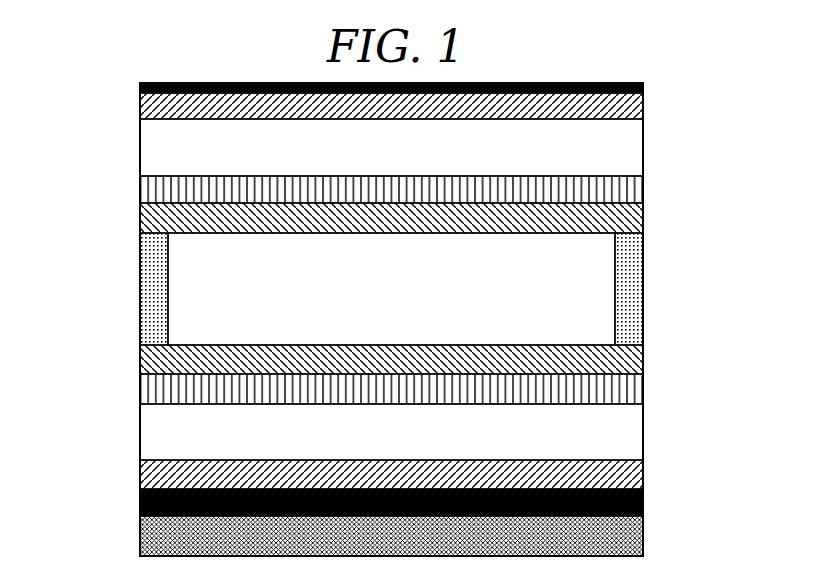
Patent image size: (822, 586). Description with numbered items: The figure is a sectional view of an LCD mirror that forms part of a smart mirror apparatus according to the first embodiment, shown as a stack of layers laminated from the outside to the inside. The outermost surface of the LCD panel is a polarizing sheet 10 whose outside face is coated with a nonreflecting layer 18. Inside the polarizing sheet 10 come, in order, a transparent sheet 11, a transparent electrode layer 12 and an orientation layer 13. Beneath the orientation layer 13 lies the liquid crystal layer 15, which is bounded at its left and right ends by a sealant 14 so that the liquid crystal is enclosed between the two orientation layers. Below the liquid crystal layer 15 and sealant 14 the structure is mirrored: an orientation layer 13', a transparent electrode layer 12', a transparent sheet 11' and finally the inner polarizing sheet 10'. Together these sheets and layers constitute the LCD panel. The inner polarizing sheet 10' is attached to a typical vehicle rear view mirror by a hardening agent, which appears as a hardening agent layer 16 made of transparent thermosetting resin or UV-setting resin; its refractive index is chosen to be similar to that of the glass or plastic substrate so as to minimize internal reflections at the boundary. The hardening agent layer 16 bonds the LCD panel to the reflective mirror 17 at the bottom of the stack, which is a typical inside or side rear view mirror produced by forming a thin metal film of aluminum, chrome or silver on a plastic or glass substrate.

The polarizing sheet 10 is at (346, 106).
The polarizing sheet 10' is at (345, 474).
The transparent sheet 11 is at (437, 147).
The transparent sheet 11' is at (439, 432).
The transparent electrode layer 12 is at (346, 189).
The transparent electrode layer 12' is at (346, 389).
The orientation layer 13 is at (437, 218).
The orientation layer 13' is at (439, 359).
The sealant 14 is at (140, 294).
The liquid crystal layer 15 is at (405, 298).
The hardening agent layer 16 is at (643, 500).
The reflective mirror 17 is at (140, 538).
The nonreflecting layer 18 is at (643, 85).